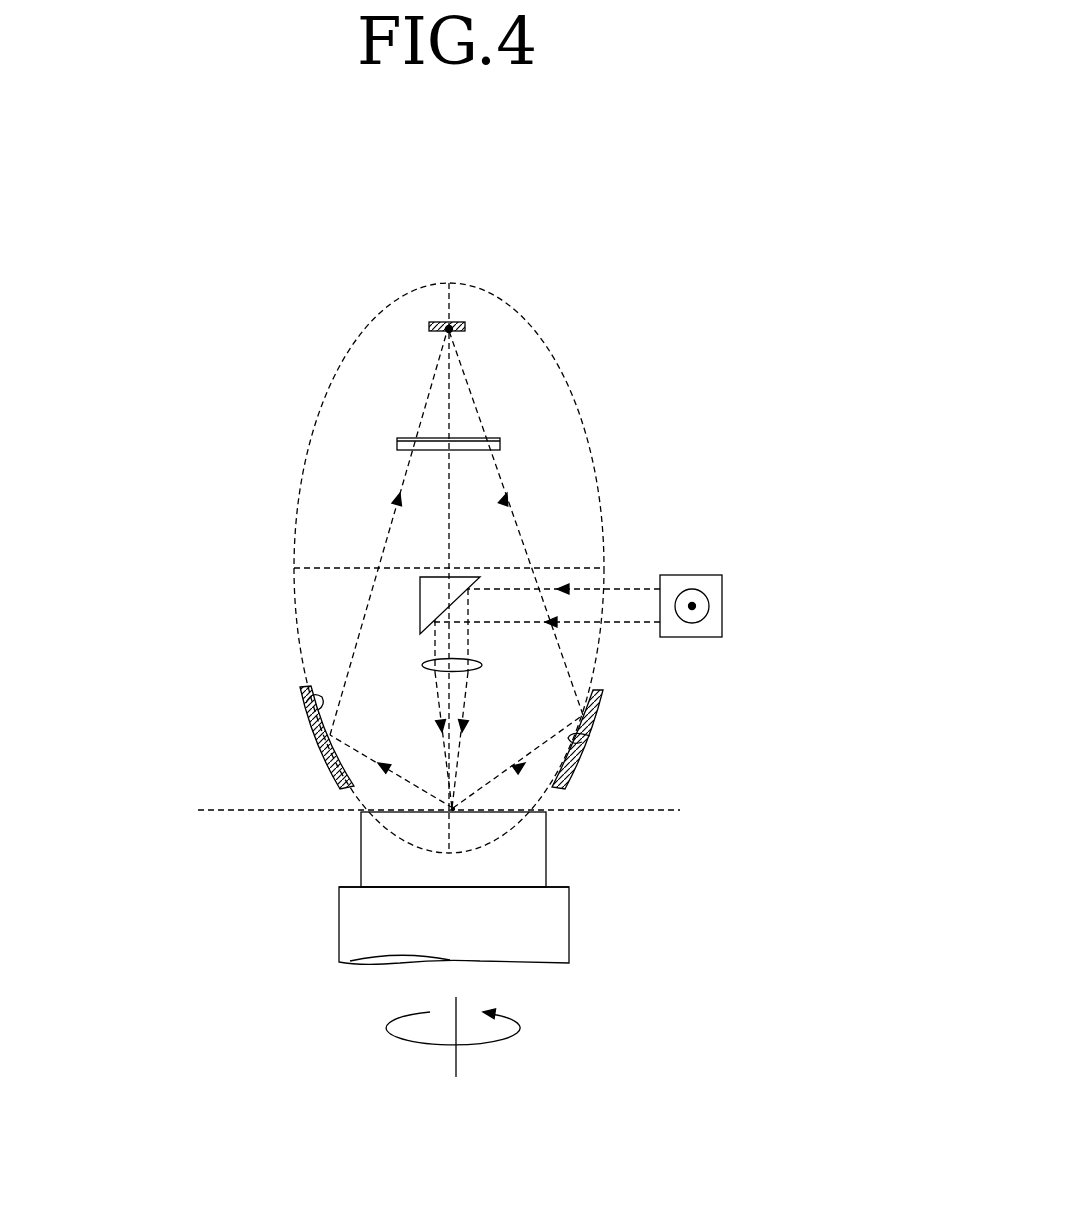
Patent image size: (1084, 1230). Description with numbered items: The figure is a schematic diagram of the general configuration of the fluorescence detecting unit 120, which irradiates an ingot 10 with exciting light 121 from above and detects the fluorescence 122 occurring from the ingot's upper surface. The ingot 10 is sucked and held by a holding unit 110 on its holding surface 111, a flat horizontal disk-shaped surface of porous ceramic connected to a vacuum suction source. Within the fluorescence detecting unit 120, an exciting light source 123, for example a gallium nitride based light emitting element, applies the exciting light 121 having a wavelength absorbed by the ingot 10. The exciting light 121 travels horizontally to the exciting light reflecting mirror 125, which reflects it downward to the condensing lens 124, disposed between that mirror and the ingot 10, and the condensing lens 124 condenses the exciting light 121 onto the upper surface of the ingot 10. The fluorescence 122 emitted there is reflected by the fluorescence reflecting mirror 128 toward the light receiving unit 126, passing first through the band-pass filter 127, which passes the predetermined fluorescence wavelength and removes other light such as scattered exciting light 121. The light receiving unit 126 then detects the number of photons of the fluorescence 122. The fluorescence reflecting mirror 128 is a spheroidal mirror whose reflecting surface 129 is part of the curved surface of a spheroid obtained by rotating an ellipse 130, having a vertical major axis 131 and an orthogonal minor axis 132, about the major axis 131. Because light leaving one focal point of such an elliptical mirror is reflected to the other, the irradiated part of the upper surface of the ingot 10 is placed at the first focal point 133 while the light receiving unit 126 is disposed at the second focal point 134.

The ingot 10 is at (530, 827).
The holding unit 110 is at (560, 928).
The holding surface 111 is at (350, 887).
The fluorescence detecting unit 120 is at (472, 545).
The exciting light 121 is at (628, 589).
The fluorescence 122 is at (528, 542).
The exciting light source 123 is at (715, 592).
The condensing lens 124 is at (422, 665).
The exciting light reflecting mirror 125 is at (432, 580).
The light receiving unit 126 is at (452, 322).
The band-pass filter 127 is at (500, 443).
The fluorescence reflecting mirror 128 is at (327, 768).
The reflecting surface 129 is at (306, 703).
The ellipse 130 is at (570, 385).
The major axis 131 is at (443, 410).
The minor axis 132 is at (330, 568).
The first focal point 133 is at (453, 812).
The second focal point 134 is at (451, 331).